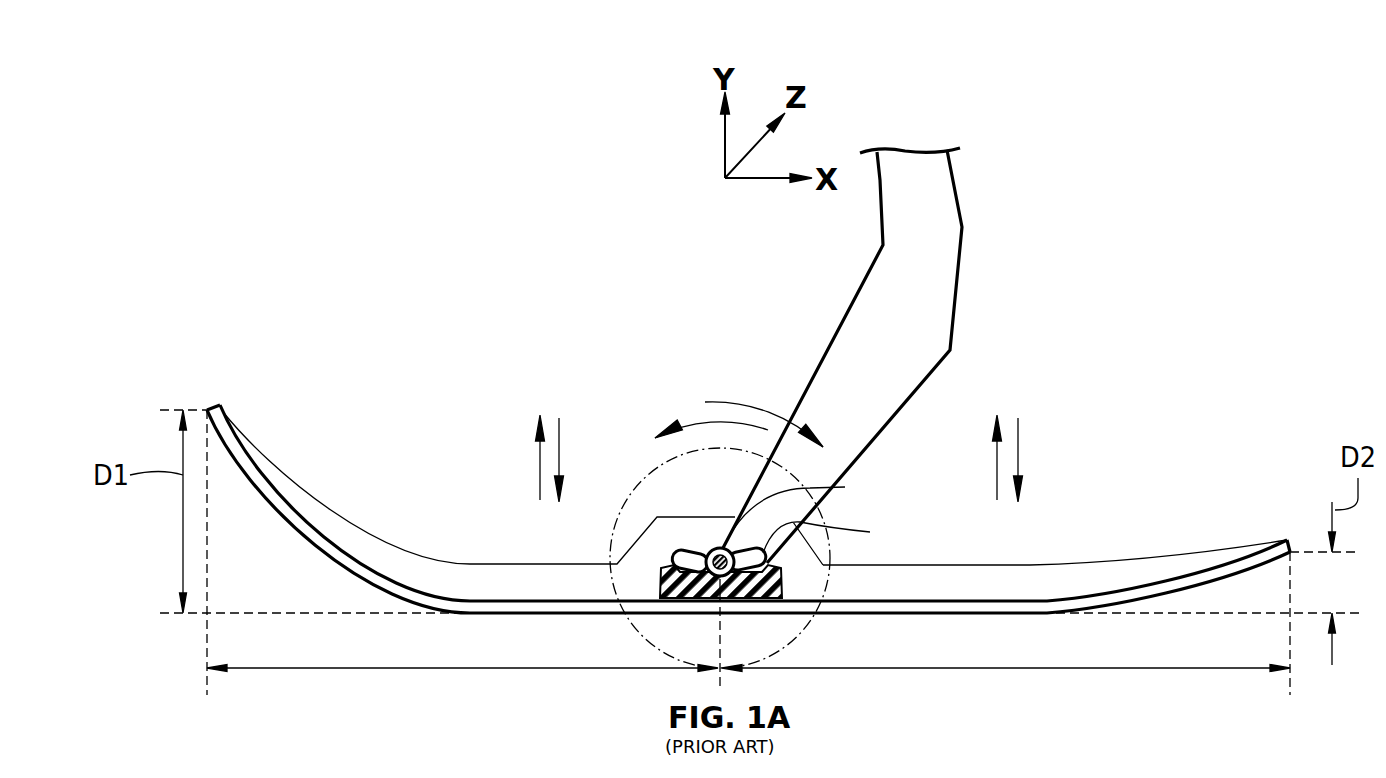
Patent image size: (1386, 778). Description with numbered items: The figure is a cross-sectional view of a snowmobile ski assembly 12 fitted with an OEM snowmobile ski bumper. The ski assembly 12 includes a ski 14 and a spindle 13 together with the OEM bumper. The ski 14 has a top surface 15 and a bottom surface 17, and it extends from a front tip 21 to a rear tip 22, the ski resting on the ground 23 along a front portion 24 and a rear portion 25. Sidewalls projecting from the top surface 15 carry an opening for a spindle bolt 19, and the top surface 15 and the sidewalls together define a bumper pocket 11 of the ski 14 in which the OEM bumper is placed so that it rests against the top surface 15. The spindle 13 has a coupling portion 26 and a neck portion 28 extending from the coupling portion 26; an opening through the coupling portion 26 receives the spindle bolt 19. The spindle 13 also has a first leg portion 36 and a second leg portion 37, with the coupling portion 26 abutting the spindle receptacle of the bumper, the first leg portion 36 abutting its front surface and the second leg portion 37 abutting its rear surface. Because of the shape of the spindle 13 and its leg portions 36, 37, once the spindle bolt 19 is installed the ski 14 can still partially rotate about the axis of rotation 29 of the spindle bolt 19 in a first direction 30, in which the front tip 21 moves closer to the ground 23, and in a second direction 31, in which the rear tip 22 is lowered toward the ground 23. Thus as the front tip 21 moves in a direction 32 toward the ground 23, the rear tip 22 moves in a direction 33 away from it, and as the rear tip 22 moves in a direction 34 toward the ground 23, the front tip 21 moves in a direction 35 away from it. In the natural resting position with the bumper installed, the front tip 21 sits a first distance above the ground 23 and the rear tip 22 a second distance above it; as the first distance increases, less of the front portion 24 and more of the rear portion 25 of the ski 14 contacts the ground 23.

The bumper pocket 11 is at (640, 580).
The snowmobile ski assembly 12 is at (741, 427).
The spindle 13 is at (834, 542).
The ski 14 is at (380, 575).
The top surface 15 is at (458, 597).
The bottom surface 17 is at (1207, 580).
The spindle bolt 19 is at (718, 595).
The front tip 21 is at (207, 410).
The rear tip 22 is at (1288, 540).
The ground 23 is at (257, 613).
The front portion 24 is at (380, 668).
The rear portion 25 is at (1057, 668).
The coupling portion 26 is at (705, 555).
The neck portion 28 is at (950, 243).
The axis of rotation 29 is at (804, 506).
The first direction 30 is at (698, 420).
The second direction 31 is at (797, 407).
The direction 32 is at (559, 455).
The direction 33 is at (997, 455).
The direction 34 is at (1018, 455).
The direction 35 is at (540, 455).
The first leg portion 36 is at (690, 560).
The second leg portion 37 is at (750, 563).